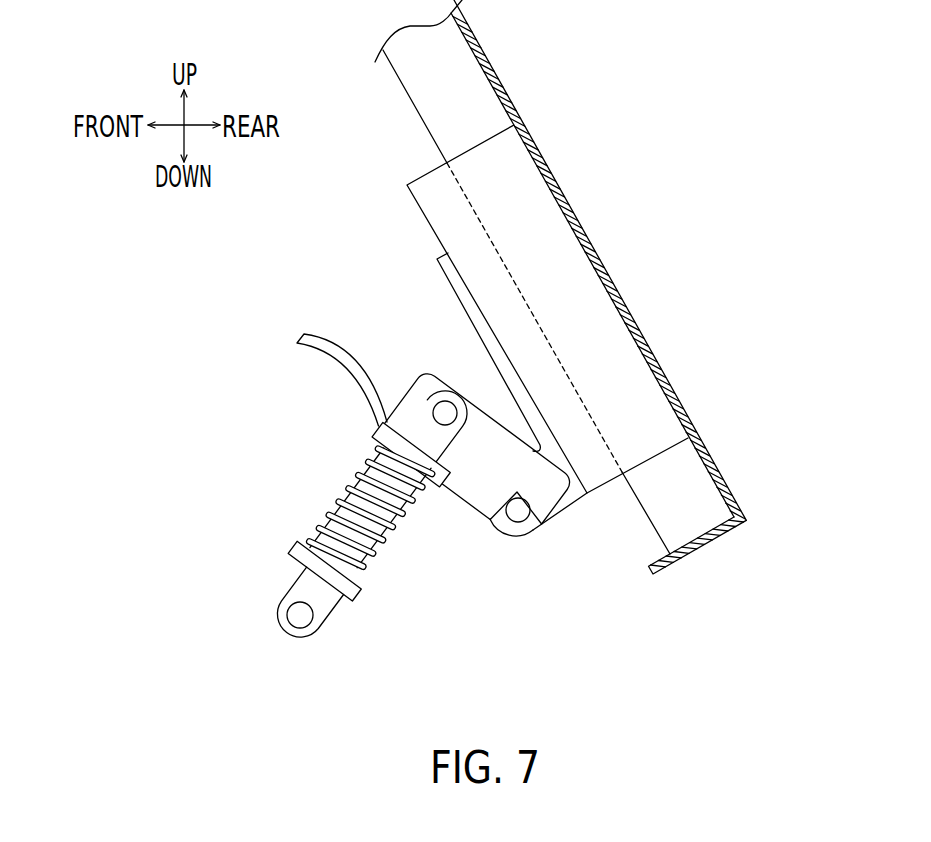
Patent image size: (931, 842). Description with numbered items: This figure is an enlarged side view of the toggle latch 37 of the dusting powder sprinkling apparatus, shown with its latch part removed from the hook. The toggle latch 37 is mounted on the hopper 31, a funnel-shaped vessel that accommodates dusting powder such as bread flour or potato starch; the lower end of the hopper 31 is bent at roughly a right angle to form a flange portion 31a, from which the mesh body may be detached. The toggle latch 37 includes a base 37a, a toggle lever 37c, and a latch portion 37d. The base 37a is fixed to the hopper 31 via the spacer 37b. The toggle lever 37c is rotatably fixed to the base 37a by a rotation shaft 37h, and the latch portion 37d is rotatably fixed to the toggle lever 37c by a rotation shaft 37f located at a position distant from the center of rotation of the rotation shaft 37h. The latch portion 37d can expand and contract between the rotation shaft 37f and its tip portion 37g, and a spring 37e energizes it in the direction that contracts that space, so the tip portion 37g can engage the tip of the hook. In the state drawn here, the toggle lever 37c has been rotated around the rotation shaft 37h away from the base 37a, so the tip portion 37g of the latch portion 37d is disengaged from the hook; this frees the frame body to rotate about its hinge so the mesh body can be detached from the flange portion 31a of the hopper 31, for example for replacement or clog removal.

The hopper 31 is at (592, 247).
The flange portion 31a is at (708, 548).
The toggle latch 37 is at (302, 544).
The base 37a is at (446, 277).
The spacer 37b is at (427, 173).
The toggle lever 37c is at (402, 393).
The latch portion 37d is at (293, 575).
The spring 37e is at (333, 502).
The rotation shaft 37f is at (445, 400).
The tip portion 37g is at (300, 615).
The rotation shaft 37h is at (518, 510).